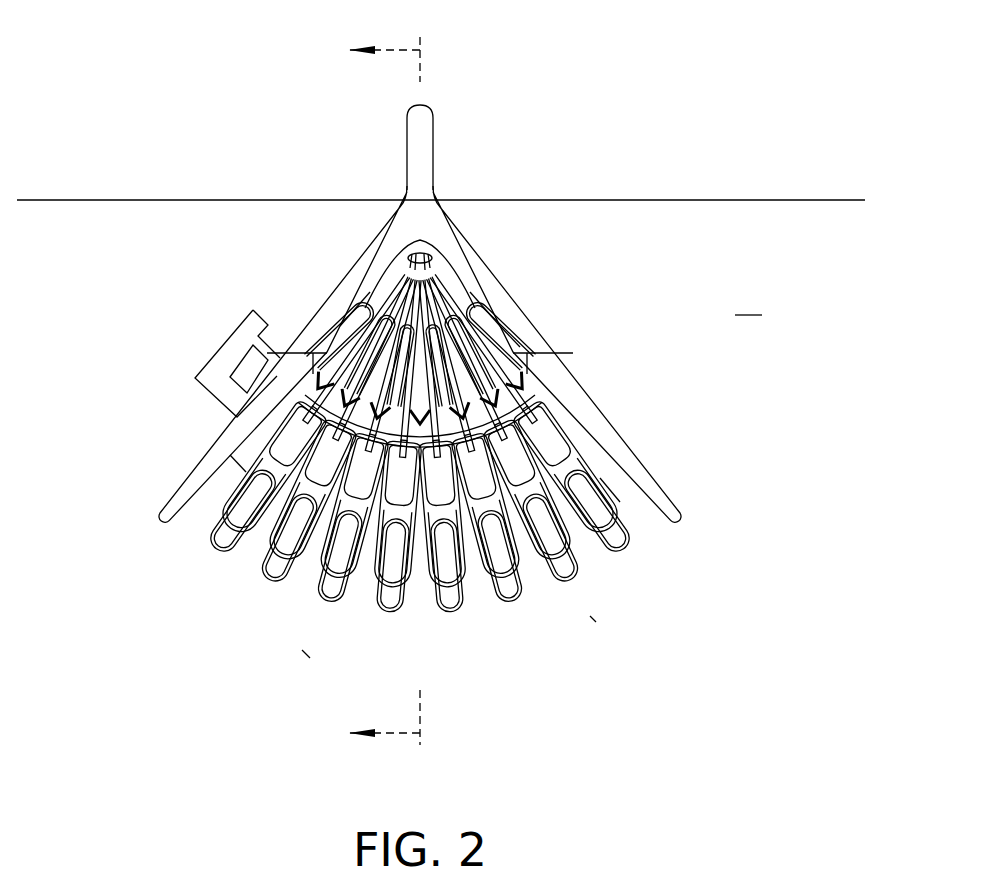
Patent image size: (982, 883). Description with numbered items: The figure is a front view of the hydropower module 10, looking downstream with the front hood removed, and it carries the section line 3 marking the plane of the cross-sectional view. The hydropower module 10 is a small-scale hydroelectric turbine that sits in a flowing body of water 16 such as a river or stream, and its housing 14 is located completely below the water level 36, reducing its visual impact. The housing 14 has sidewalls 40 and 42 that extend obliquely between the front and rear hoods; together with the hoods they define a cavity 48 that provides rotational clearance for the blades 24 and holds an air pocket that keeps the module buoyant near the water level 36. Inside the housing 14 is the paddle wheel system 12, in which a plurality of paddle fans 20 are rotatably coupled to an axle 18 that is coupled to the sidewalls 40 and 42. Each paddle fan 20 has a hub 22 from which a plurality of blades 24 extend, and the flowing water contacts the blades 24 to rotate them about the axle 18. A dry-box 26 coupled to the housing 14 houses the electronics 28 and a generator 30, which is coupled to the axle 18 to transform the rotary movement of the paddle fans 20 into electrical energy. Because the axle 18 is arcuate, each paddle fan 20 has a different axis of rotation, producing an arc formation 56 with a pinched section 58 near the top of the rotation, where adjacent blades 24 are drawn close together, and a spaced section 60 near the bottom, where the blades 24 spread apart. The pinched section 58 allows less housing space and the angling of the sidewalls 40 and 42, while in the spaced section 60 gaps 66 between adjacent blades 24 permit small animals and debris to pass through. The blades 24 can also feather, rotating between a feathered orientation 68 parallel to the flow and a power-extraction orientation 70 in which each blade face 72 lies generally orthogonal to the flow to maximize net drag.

The section line 3- 3 is at (395, 393).
The hydropower module 10 is at (180, 96).
The paddle wheel system 12 is at (305, 655).
The housing 14 is at (500, 282).
The flowing body of water 16 is at (748, 302).
The axle 18 is at (290, 395).
The paddle fan 20 is at (577, 426).
The hub 22 is at (537, 405).
The blade 24 is at (432, 262).
The dry-box 26 is at (253, 322).
The electronics 28 is at (280, 337).
The generator 30 is at (253, 355).
The water level 36 is at (604, 199).
The sidewall 40 is at (522, 310).
The sidewall 42 is at (333, 305).
The cavity 48 is at (512, 272).
The arc formation 56 is at (598, 622).
The pinched section 58 is at (390, 256).
The spaced section 60 is at (236, 464).
The gap 66 is at (530, 552).
The feathered orientation 68 is at (456, 268).
The power-extraction orientation 70 is at (626, 502).
The blade face 72 is at (331, 588).